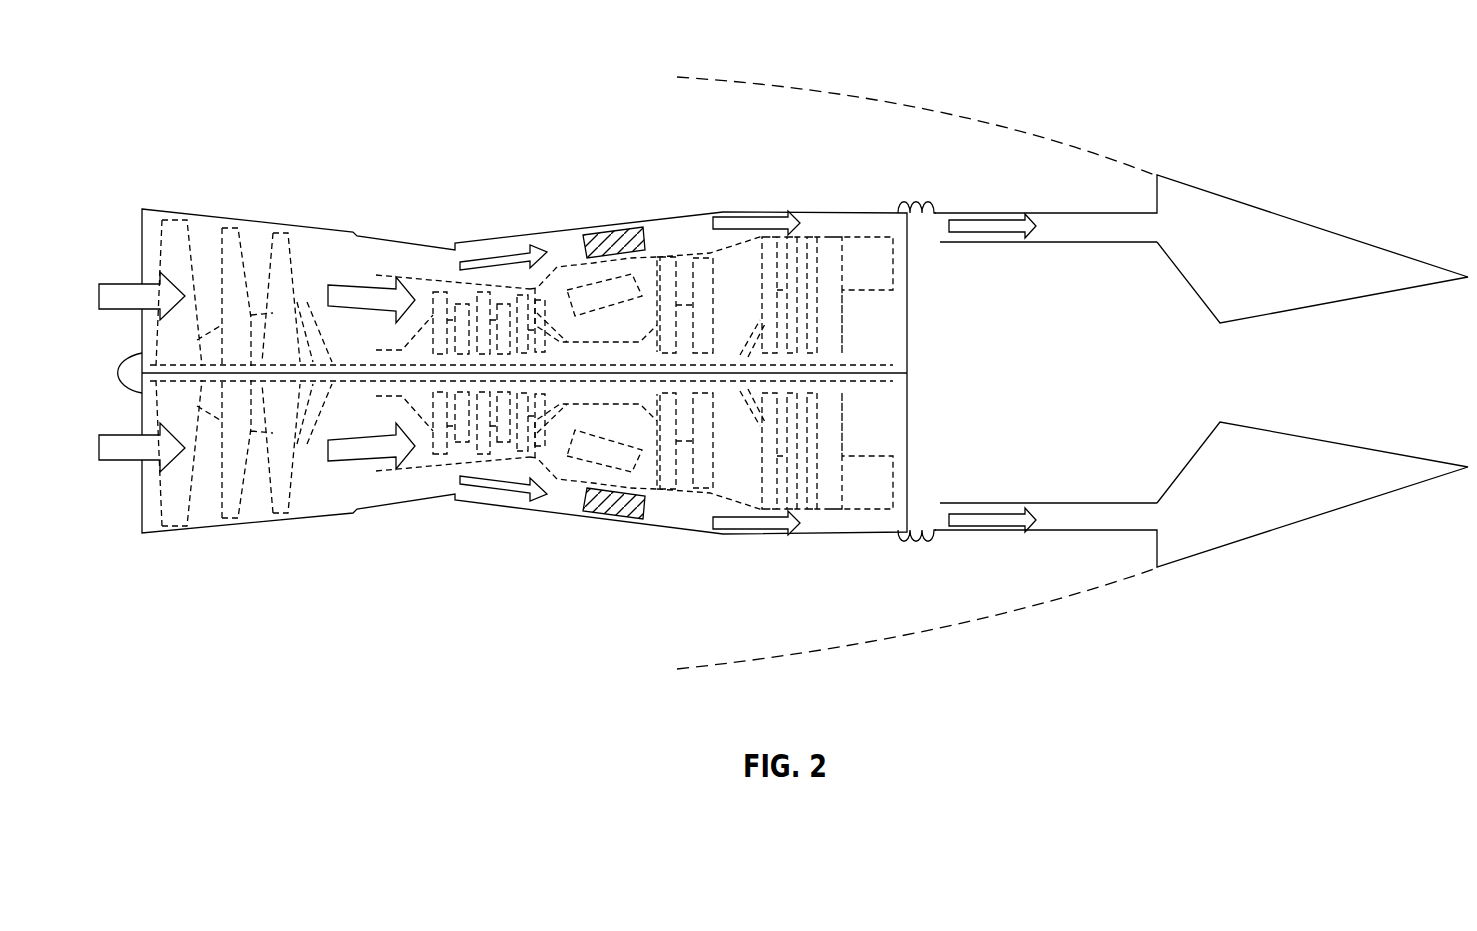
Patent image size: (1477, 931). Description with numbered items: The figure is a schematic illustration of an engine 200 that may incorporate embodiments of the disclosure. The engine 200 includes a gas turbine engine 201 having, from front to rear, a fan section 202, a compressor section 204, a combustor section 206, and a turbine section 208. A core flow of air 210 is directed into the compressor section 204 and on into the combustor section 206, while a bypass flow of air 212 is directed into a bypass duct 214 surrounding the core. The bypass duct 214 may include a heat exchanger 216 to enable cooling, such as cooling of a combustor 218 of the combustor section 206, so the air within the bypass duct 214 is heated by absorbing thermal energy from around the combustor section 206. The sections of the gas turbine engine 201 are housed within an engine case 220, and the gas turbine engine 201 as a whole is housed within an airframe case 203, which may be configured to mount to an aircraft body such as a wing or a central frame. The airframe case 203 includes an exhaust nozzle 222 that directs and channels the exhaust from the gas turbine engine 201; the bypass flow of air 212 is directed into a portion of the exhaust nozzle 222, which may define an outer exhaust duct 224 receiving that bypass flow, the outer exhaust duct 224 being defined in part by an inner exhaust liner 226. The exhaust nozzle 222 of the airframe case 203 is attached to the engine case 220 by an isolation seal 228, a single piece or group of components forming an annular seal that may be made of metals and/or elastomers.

The engine 200 is at (1322, 114).
The gas turbine engine 201 is at (385, 237).
The fan section 202 is at (173, 563).
The airframe case 203 is at (786, 88).
The compressor section 204 is at (404, 577).
The combustor section 206 is at (616, 563).
The turbine section 208 is at (766, 557).
The core flow of air 210 is at (371, 461).
The bypass flow of air 212 is at (490, 498).
The bypass duct 214 is at (559, 510).
The heat exchanger 216 is at (615, 235).
The combustor 218 is at (582, 290).
The engine case 220 is at (808, 213).
The exhaust nozzle 222 is at (960, 213).
The outer exhaust duct 224 is at (1055, 237).
The inner exhaust liner 226 is at (1112, 243).
The isolation seal 228 is at (915, 205).